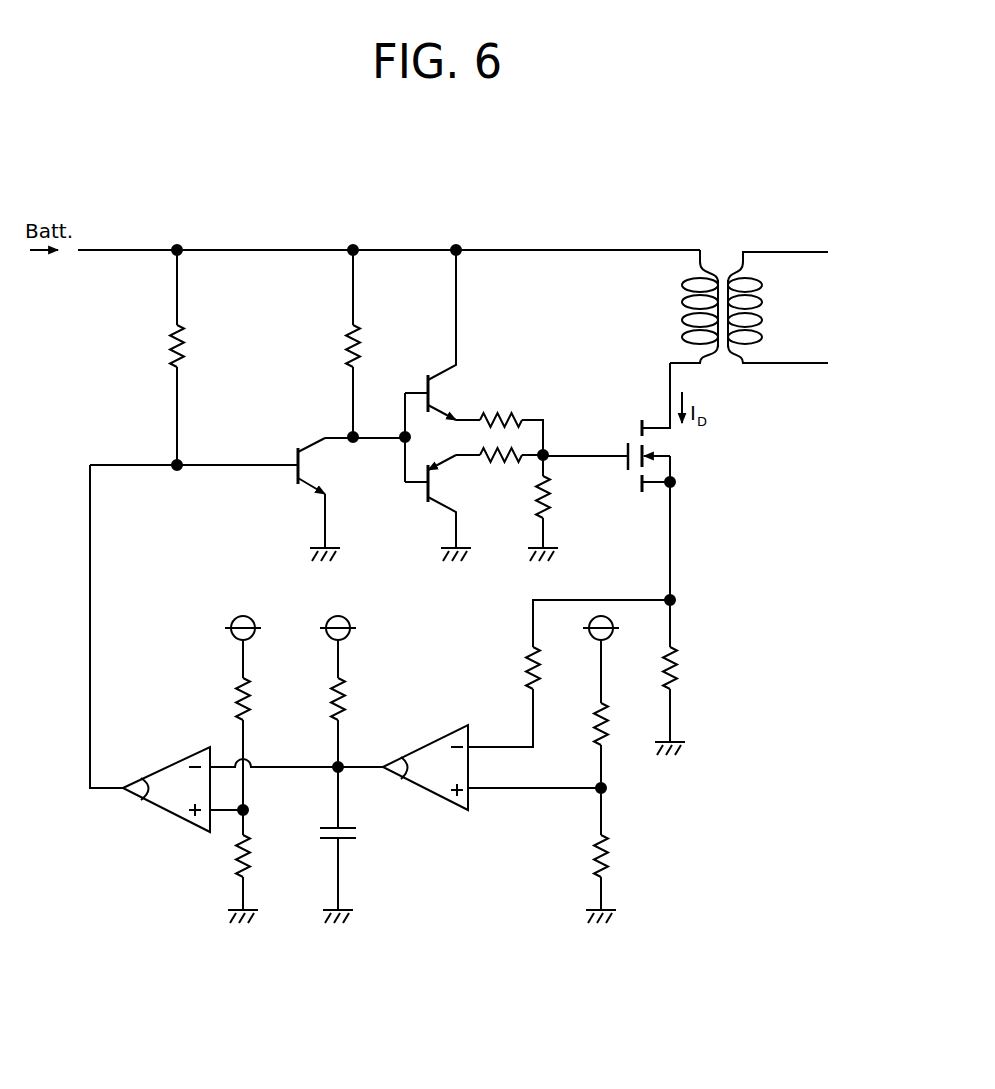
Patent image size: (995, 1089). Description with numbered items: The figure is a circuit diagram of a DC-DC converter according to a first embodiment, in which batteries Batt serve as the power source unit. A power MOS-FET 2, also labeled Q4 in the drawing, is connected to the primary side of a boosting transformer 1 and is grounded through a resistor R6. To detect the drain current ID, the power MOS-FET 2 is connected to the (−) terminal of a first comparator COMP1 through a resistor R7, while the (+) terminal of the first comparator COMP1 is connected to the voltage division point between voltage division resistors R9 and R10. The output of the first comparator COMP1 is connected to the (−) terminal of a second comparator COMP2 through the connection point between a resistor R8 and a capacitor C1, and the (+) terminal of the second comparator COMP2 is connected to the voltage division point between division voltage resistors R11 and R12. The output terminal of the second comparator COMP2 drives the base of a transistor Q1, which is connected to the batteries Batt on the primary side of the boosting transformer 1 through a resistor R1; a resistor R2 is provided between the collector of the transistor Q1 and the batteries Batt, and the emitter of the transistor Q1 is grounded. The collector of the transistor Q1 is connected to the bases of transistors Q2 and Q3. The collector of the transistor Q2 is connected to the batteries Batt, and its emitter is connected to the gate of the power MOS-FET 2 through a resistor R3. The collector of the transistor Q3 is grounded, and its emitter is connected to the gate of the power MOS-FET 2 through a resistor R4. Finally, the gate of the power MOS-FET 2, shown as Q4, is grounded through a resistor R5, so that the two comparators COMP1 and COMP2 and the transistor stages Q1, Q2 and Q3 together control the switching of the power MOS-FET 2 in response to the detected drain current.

The boosting transformer 1 is at (716, 250).
The power MOS-FET 2 is at (676, 432).
The resistor R1 is at (159, 357).
The resistor R2 is at (336, 343).
The resistor R3 is at (499, 421).
The resistor R4 is at (499, 468).
The resistor R5 is at (561, 501).
The resistor R6 is at (686, 671).
The resistor R7 is at (569, 673).
The resistor R8 is at (356, 703).
The voltage division resistor R9 is at (618, 714).
The voltage division resistor R10 is at (625, 849).
The division voltage resistor R11 is at (269, 725).
The division voltage resistor R12 is at (269, 860).
The transistor Q1 is at (306, 483).
The transistor Q2 is at (424, 335).
The transistor Q3 is at (424, 501).
The MOSFET Q4 is at (636, 427).
The capacitor C1 is at (355, 838).
The first comparator COMP1 is at (420, 759).
The second comparator COMP2 is at (160, 781).